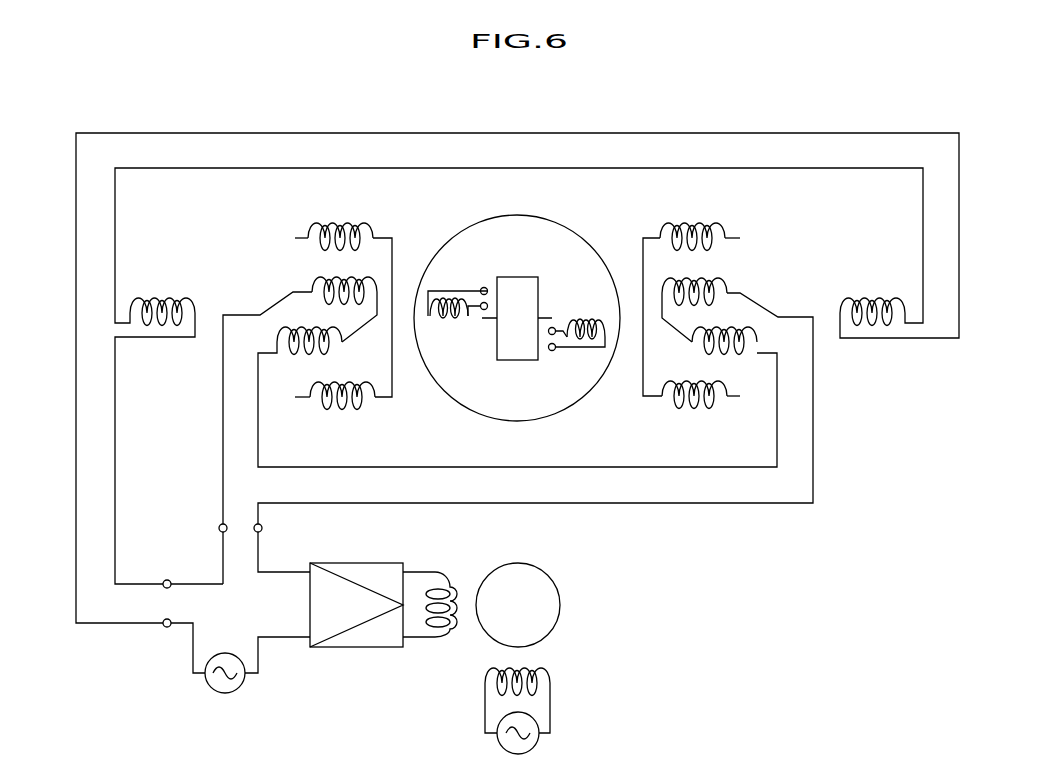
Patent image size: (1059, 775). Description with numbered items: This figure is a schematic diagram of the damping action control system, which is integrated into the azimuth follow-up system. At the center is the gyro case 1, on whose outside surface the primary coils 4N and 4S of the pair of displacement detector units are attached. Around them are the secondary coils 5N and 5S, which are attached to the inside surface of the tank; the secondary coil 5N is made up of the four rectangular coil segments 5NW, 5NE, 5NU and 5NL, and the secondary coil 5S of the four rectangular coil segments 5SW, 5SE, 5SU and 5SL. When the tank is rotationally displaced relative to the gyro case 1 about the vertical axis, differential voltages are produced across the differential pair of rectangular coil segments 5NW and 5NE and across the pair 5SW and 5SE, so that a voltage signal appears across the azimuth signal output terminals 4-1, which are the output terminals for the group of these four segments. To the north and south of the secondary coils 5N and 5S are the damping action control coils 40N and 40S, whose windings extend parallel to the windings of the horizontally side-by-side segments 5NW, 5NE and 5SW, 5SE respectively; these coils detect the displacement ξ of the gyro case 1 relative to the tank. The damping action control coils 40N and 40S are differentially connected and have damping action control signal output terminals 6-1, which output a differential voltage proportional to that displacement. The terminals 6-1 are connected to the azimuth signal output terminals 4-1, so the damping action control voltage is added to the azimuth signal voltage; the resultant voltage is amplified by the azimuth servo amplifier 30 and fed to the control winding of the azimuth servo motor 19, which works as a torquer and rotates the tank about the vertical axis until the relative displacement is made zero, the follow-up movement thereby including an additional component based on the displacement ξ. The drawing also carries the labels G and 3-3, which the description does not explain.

The gyro case 1 is at (567, 408).
The sensor element G is at (518, 360).
The primary coil 4N is at (447, 318).
The primary coil 4S is at (580, 318).
The secondary coil 5N is at (275, 235).
The secondary coil 5S is at (770, 235).
The rectangular coil segment 5NU is at (322, 240).
The rectangular coil segment 5NE is at (375, 280).
The rectangular coil segment 5NW is at (302, 354).
The rectangular coil segment 5NL is at (343, 406).
The rectangular coil segment 5SU is at (712, 238).
The rectangular coil segment 5SE is at (662, 278).
The rectangular coil segment 5SW is at (728, 355).
The rectangular coil segment 5SL is at (682, 406).
The damping action control coil 40N is at (158, 300).
The damping action control coil 40S is at (877, 300).
The azimuth signal output terminals 4-1 is at (258, 524).
The damping action control signal output terminals 6-1 is at (165, 585).
The AC power supply 3-3 is at (225, 653).
The azimuth servo amplifier 30 is at (362, 647).
The azimuth servo motor 19 is at (550, 627).